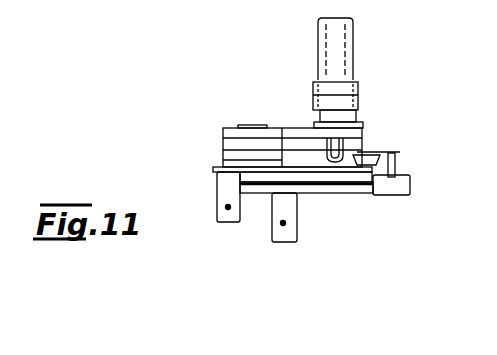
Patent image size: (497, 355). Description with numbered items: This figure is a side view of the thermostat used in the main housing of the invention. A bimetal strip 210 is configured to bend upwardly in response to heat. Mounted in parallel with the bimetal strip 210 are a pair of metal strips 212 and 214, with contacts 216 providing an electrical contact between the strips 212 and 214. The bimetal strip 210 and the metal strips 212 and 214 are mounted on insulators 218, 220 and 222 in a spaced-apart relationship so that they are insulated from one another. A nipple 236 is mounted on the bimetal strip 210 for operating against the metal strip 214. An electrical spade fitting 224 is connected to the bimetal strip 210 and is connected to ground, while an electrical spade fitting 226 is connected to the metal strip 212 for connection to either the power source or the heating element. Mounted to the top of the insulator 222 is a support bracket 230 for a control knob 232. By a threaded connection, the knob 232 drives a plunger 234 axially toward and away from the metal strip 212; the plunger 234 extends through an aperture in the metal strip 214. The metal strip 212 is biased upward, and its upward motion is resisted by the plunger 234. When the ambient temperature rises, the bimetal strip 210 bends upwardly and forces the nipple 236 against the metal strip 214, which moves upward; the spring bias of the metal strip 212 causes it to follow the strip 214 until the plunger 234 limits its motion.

The bimetal strip 210 is at (300, 193).
The metal strip 212 is at (310, 168).
The metal strip 214 is at (322, 168).
The contacts 216 is at (370, 193).
The insulator 218 is at (215, 182).
The insulator 220 is at (222, 158).
The insulator 222 is at (222, 141).
The electrical spade fitting 224 is at (262, 225).
The electrical spade fitting 226 is at (215, 207).
The support bracket 230 is at (292, 119).
The control knob 232 is at (352, 35).
The plunger 234 is at (350, 147).
The nipple 236 is at (400, 155).